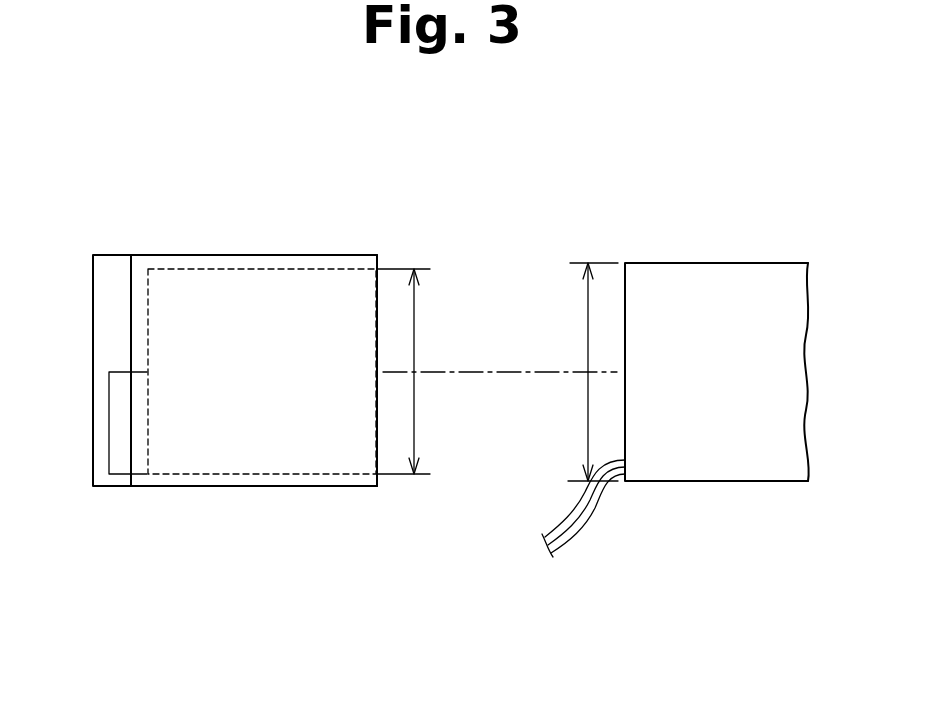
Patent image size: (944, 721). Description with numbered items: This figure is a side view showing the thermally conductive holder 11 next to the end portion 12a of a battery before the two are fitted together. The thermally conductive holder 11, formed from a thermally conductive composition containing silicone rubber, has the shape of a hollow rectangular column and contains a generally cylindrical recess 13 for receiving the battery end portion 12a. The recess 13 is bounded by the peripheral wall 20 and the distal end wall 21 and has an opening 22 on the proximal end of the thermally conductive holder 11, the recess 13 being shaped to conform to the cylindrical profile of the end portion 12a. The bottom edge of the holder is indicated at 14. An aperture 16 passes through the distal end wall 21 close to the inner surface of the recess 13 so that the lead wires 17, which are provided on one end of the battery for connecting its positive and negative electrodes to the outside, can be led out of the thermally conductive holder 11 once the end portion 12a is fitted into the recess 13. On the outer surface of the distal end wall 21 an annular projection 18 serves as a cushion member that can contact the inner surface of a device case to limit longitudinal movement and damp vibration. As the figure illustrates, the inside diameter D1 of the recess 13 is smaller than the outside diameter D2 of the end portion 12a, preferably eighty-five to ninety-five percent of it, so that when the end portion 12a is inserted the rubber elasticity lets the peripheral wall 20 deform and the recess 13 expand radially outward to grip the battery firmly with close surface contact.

The thermally conductive holder 11 is at (193, 255).
The end portion 12a is at (757, 262).
The recess 13 is at (262, 260).
The lower edge portion 14 is at (283, 466).
The aperture 16 is at (142, 484).
The lead wires 17 is at (596, 518).
The annular projection 18 is at (109, 255).
The peripheral wall 20 is at (349, 480).
The distal end wall 21 is at (140, 330).
The opening 22 is at (378, 285).
The inside diameter D1 is at (415, 322).
The outside diameter D2 is at (588, 324).